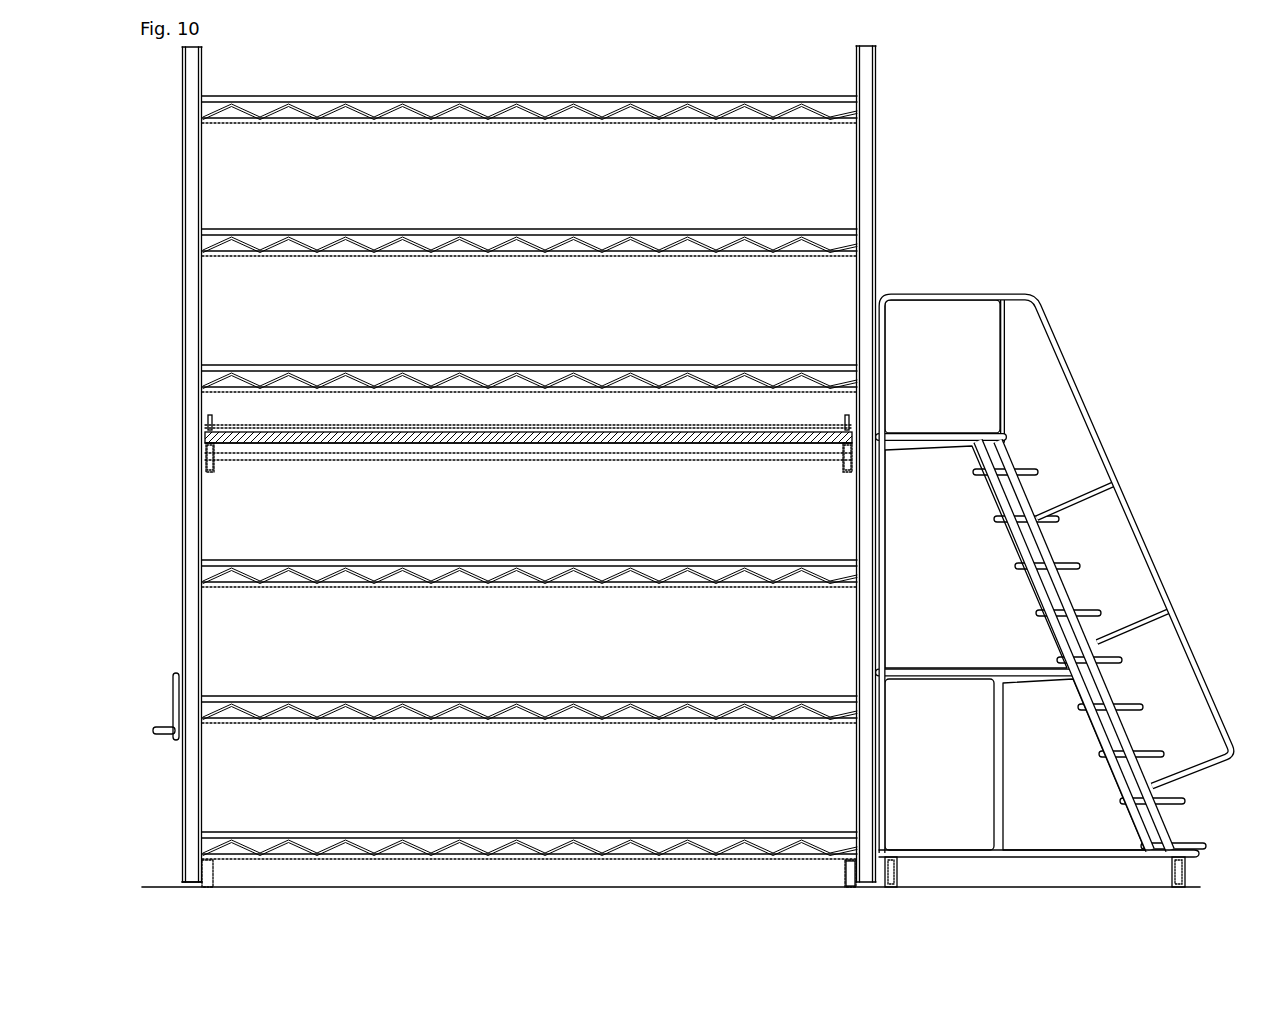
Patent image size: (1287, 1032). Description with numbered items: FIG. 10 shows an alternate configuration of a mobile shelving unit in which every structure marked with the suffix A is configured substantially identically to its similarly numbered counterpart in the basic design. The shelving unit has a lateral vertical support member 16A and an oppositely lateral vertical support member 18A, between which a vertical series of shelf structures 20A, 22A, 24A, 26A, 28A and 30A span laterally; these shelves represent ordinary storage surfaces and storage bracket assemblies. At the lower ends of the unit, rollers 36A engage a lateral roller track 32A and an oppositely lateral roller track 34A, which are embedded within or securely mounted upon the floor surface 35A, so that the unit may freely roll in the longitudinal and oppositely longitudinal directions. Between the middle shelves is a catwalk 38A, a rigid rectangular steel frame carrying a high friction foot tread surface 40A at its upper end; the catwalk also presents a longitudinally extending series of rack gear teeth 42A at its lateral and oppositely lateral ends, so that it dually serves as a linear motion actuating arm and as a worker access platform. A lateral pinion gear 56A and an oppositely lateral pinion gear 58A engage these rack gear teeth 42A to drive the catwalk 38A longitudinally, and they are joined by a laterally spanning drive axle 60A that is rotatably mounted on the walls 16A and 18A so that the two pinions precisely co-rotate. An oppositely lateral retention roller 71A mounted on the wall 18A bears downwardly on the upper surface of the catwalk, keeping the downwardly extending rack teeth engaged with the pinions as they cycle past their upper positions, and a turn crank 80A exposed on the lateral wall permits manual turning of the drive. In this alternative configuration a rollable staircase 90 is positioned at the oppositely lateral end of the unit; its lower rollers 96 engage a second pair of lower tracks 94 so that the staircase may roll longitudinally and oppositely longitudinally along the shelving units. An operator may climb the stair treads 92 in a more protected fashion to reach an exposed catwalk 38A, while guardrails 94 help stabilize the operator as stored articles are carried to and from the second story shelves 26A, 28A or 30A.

The lateral vertical support member 16A is at (190, 120).
The oppositely lateral vertical support member 18A is at (865, 90).
The shelf structure 20A is at (335, 833).
The shelf structure 22A is at (322, 697).
The shelf structure 24A is at (528, 561).
The shelf structure 26A is at (272, 366).
The shelf structure 28A is at (265, 230).
The shelf structure 30A is at (287, 96).
The lateral roller track 32A is at (210, 886).
The oppositely lateral roller track 34A is at (846, 870).
The floor surface 35A is at (541, 934).
The roller 36A is at (214, 868).
The catwalk 38A is at (353, 444).
The foot tread surface 40A is at (300, 432).
The rack gear teeth 42A is at (212, 455).
The lateral pinion gear 56A is at (211, 470).
The oppositely lateral pinion gear 58A is at (840, 465).
The drive axle 60A is at (420, 458).
The oppositely lateral retention roller 71A is at (843, 416).
The turn crank 80A is at (158, 724).
The rollable staircase 90 is at (1112, 451).
The stair tread 92 is at (1137, 700).
The lower track / guardrail 94 is at (1065, 350).
The lower roller 96 is at (896, 868).